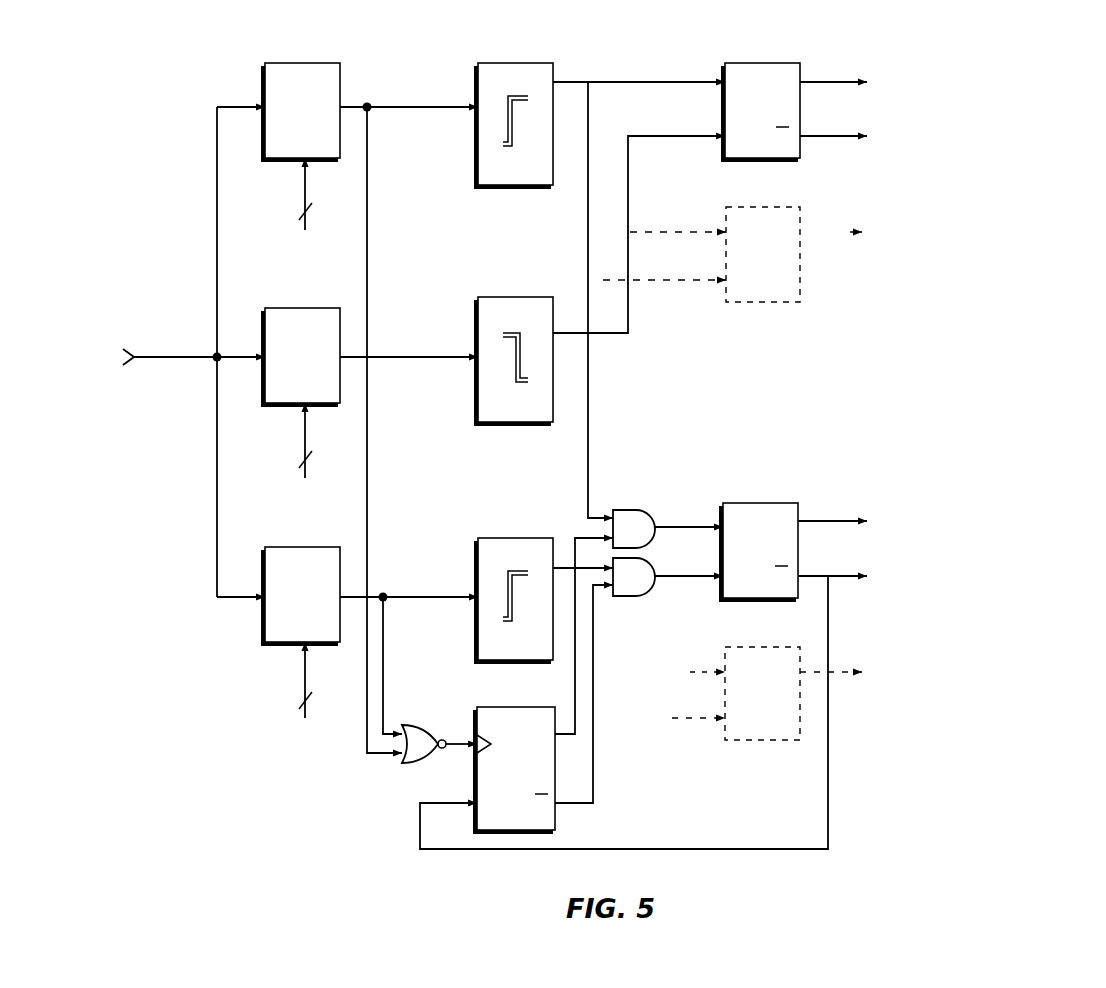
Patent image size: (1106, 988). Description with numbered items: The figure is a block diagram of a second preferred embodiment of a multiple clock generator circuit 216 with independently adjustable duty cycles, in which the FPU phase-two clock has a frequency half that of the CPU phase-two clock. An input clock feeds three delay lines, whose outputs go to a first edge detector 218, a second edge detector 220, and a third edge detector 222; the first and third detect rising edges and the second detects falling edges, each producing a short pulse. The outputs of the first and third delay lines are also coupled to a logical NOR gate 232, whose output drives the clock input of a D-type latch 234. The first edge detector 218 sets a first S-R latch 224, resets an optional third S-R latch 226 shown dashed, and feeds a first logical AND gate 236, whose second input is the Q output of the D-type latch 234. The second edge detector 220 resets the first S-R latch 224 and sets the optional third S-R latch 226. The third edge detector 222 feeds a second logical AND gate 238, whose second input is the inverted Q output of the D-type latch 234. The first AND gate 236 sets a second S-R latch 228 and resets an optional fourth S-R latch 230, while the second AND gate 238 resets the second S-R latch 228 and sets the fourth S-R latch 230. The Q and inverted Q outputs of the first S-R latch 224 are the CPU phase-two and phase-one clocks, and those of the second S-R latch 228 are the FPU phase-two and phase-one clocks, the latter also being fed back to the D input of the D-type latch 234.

The multiple clock generator circuit 216 is at (1000, 86).
The first edge detector 218 is at (492, 63).
The second edge detector 220 is at (484, 297).
The third edge detector 222 is at (487, 538).
The first S-R latch 224 is at (732, 63).
The optional third S-R latch 226 is at (732, 207).
The second S-R latch 228 is at (730, 503).
The optional fourth S-R latch 230 is at (730, 647).
The logical NOR gate 232 is at (410, 728).
The D-type latch 234 is at (486, 707).
The first logical AND gate 236 is at (625, 511).
The second logical AND gate 238 is at (620, 598).